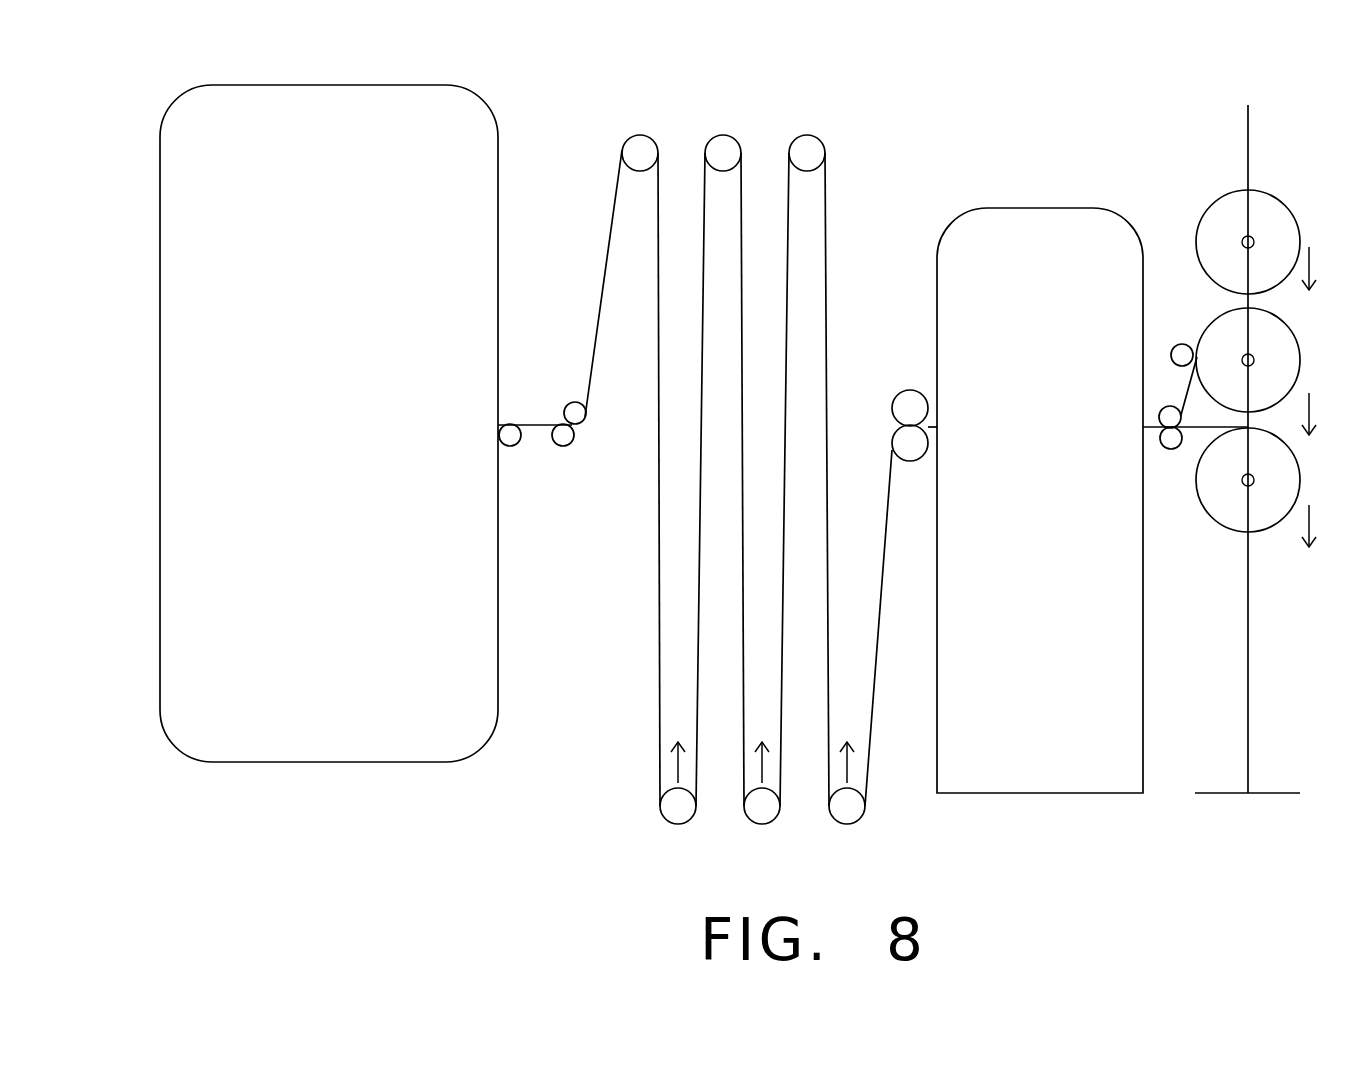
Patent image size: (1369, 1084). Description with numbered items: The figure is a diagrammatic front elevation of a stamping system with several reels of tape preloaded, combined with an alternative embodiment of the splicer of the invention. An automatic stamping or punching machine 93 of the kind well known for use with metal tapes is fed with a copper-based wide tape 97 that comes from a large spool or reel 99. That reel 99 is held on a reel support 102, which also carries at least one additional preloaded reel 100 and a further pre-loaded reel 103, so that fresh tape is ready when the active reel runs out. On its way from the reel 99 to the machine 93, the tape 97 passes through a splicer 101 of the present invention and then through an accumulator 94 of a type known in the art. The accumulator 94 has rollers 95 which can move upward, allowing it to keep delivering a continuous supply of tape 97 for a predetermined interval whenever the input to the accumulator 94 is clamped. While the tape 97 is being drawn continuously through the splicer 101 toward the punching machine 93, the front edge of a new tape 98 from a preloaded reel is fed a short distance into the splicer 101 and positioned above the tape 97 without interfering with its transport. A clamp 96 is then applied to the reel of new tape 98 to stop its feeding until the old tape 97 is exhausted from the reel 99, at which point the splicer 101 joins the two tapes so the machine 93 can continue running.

The automatic stamping or punching machine 93 is at (364, 447).
The accumulator 94 is at (779, 502).
The rollers 95 is at (784, 831).
The clamp 96 is at (1195, 330).
The wide tape 97 is at (873, 317).
The new tape 98 is at (1172, 392).
The reel 99 is at (1256, 502).
The preloaded reel 100 is at (1271, 367).
The splicer 101 is at (1040, 532).
The reel support 102 is at (1240, 449).
The preloaded reel 103 is at (1228, 222).